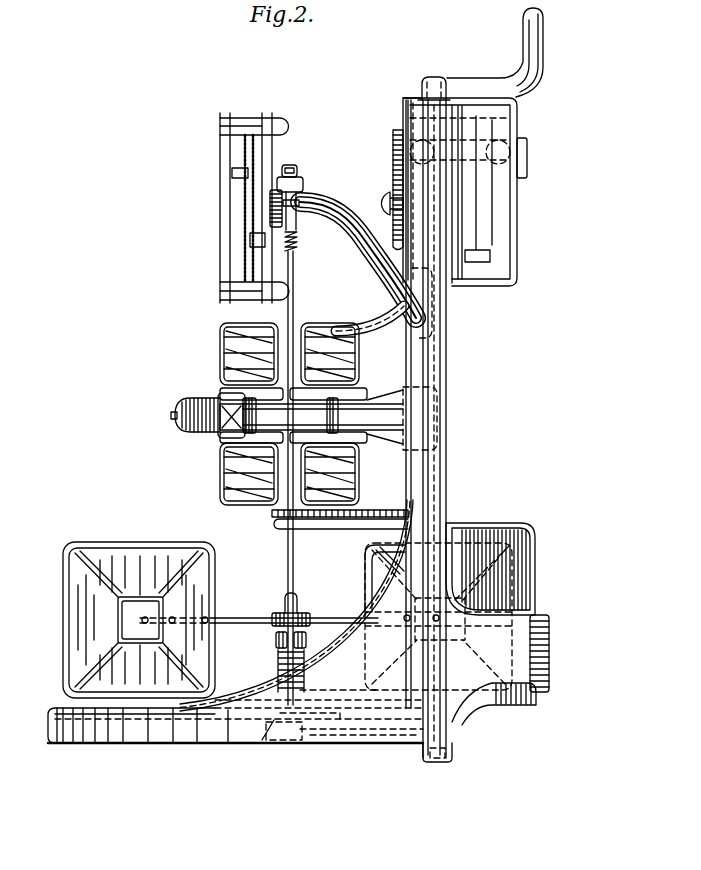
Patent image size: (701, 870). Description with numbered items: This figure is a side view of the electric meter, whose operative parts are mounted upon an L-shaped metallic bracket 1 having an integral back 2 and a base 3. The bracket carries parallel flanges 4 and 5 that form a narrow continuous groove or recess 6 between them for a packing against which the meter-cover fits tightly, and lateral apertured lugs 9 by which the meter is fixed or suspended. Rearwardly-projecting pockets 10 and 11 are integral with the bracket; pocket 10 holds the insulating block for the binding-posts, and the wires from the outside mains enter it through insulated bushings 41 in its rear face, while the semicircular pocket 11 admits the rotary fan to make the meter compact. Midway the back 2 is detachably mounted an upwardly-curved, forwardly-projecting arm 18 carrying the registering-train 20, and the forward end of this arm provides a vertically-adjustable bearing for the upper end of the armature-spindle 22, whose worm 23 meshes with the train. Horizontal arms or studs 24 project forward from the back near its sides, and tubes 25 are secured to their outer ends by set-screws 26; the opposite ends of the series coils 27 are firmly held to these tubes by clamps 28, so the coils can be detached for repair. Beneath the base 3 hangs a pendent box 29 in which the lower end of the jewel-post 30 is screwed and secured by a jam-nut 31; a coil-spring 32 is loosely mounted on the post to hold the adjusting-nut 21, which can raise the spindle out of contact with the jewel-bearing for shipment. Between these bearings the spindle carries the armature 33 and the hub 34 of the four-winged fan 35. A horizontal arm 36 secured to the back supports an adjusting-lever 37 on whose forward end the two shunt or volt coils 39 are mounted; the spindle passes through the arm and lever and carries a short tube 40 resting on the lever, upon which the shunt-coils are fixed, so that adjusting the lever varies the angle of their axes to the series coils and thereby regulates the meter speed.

The L-shaped metallic bracket 1 is at (360, 732).
The back 2 is at (447, 352).
The base 3 is at (341, 737).
The flange 4 is at (436, 78).
The flange 5 is at (413, 100).
The groove or recess 6 is at (428, 749).
The lateral apertured lugs 9 is at (538, 36).
The pocket 10 is at (495, 214).
The pocket 11 is at (523, 578).
The arm 18 is at (346, 210).
The registering-train 20 is at (272, 150).
The adjusting-nut 21 is at (276, 645).
The armature-spindle 22 is at (298, 294).
The worm 23 is at (296, 249).
The horizontal arms or studs 24 is at (390, 420).
The tubes 25 is at (222, 448).
The set-screws 26 is at (200, 432).
The series coils 27 is at (227, 342).
The clamps 28 is at (243, 403).
The pendent box 29 is at (264, 740).
The jewel-post 30 is at (278, 673).
The jam-nut 31 is at (293, 742).
The coil-spring 32 is at (303, 660).
The armature 33 is at (172, 417).
The hub 34 is at (277, 614).
The four-winged fan 35 is at (80, 572).
The horizontal arm 36 is at (274, 524).
The adjusting-lever 37 is at (272, 513).
The shunt or volt coils 39 is at (178, 407).
The short tube 40 is at (222, 488).
The insulated bushings 41 is at (528, 154).